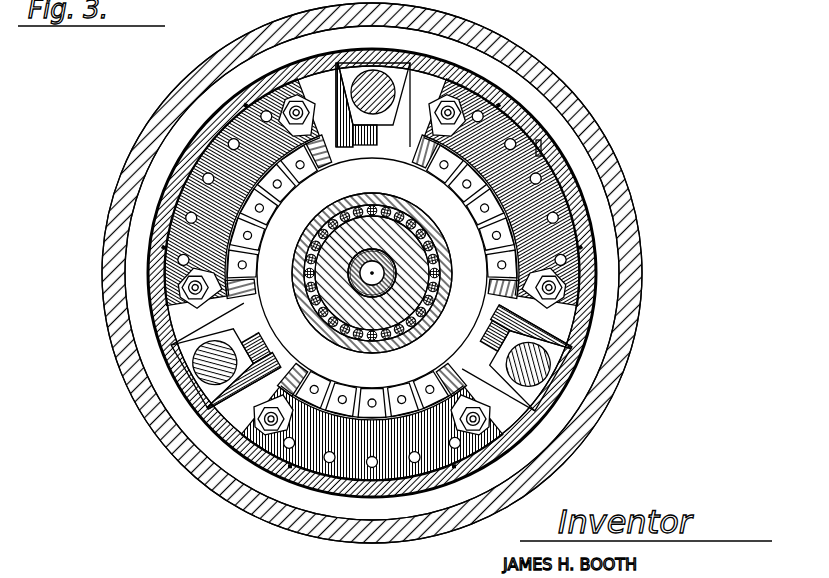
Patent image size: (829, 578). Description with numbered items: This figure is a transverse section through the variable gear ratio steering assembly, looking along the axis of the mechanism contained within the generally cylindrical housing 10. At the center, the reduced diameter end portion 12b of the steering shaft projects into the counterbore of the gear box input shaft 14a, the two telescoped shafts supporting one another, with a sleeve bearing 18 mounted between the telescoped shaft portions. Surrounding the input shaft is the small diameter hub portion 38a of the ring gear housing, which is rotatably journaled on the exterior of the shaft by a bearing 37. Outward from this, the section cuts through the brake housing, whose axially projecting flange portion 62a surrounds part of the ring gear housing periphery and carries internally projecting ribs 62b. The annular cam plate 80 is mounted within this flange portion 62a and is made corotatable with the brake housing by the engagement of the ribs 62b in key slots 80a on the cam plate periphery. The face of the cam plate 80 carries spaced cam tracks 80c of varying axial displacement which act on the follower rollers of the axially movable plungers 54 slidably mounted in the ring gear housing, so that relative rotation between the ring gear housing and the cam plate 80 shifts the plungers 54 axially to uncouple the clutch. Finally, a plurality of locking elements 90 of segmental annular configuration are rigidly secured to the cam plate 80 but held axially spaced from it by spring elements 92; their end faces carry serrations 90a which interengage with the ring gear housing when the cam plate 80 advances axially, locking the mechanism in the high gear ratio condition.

The housing 10 is at (620, 156).
The reduced diameter end portion of steering shaft 12b is at (386, 277).
The gear box input shaft 14a is at (400, 300).
The sleeve bearing 18 is at (390, 257).
The bearing 37 is at (374, 336).
The hub portion of ring gear housing 38a is at (360, 200).
The plungers 54 is at (385, 88).
The axially projecting flange portion of brake housing 62a is at (540, 158).
The internally projecting ribs 62b is at (286, 86).
The cam plate 80 is at (428, 150).
The key slots 80a is at (247, 100).
The cam tracks 80c is at (358, 158).
The locking elements 90 is at (187, 186).
The serrations 90a is at (200, 152).
The spring elements 92 is at (276, 219).